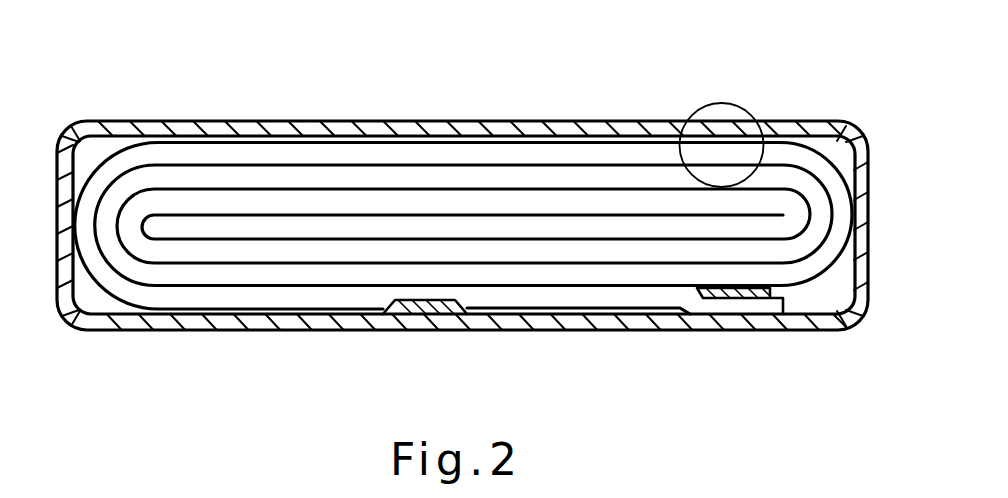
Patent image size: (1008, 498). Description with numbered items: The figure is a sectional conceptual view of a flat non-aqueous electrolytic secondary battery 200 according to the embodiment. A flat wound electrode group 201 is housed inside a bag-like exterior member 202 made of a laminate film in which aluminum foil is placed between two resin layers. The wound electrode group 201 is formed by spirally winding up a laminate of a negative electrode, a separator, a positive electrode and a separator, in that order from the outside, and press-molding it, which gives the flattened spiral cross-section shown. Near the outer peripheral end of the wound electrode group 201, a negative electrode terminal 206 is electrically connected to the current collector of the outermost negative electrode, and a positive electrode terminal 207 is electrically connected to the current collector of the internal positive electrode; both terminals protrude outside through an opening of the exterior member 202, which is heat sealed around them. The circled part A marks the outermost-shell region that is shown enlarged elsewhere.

The non-aqueous electrolytic secondary battery 200 is at (113, 31).
The flat wound electrode group 201 is at (240, 137).
The bag-like exterior member 202 is at (487, 128).
The negative electrode terminal 206 is at (432, 307).
The positive electrode terminal 207 is at (738, 298).
The part A is at (718, 103).